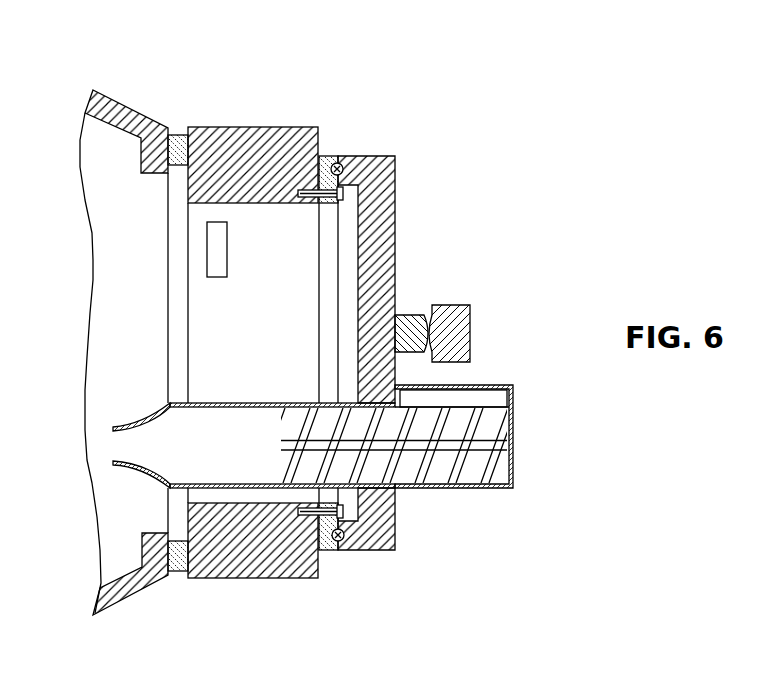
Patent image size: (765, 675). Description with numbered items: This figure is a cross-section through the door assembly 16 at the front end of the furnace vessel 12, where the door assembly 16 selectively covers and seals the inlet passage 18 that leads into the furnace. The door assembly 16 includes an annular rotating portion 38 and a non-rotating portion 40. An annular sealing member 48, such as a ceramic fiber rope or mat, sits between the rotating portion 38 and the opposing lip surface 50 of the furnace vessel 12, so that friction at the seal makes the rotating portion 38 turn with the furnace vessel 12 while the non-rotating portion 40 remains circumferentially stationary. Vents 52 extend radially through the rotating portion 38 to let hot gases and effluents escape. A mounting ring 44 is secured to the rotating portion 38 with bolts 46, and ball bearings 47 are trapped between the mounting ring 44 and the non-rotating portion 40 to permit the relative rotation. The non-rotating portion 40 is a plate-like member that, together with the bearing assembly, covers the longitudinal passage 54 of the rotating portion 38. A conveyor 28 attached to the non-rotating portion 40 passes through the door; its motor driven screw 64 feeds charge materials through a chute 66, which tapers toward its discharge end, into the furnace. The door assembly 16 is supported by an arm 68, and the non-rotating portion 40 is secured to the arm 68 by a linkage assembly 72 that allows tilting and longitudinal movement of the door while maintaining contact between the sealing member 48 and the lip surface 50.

The furnace vessel 12 is at (130, 118).
The door assembly 16 is at (413, 91).
The inlet passage 18 is at (152, 345).
The conveyor 28 is at (486, 505).
The rotating portion 38 is at (225, 143).
The non-rotating portion 40 is at (385, 187).
The mounting ring 44 is at (328, 157).
The bolts 46 is at (323, 202).
The ball bearings 47 is at (340, 163).
The sealing member 48 is at (176, 136).
The lip surface 50 is at (187, 636).
The vents 52 is at (213, 233).
The longitudinal passage 54 is at (267, 345).
The screw 64 is at (441, 470).
The chute 66 is at (140, 470).
The arm 68 is at (457, 330).
The linkage assembly 72 is at (413, 315).